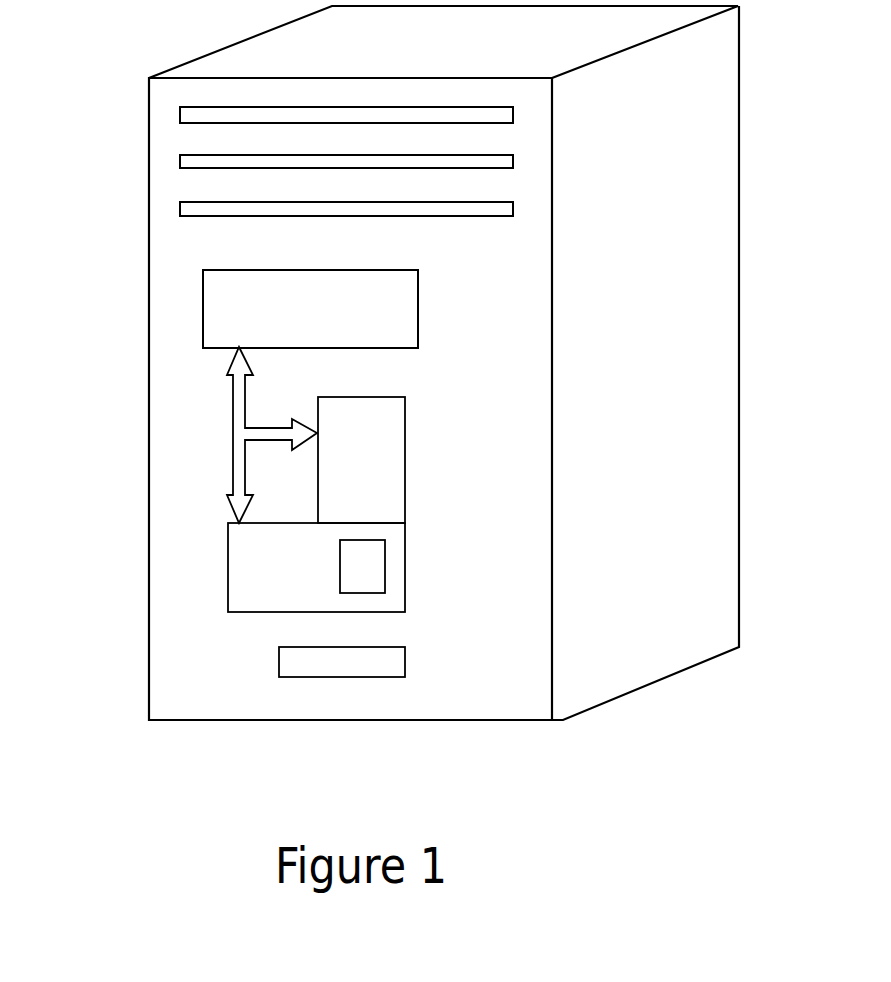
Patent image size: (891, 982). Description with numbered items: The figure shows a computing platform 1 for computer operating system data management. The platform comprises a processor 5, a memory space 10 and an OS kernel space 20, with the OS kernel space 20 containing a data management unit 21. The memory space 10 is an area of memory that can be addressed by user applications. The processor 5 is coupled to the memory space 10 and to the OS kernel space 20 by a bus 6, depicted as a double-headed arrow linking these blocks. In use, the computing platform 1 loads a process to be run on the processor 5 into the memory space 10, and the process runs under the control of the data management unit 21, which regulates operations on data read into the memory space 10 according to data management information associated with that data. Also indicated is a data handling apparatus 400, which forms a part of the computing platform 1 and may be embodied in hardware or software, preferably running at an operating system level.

The computing platform 1 is at (777, 340).
The processor 5 is at (418, 307).
The bus 6 is at (232, 423).
The memory space 10 is at (405, 437).
The OS kernel space 20 is at (405, 535).
The data management unit 21 is at (385, 577).
The data handling apparatus 400 is at (318, 677).